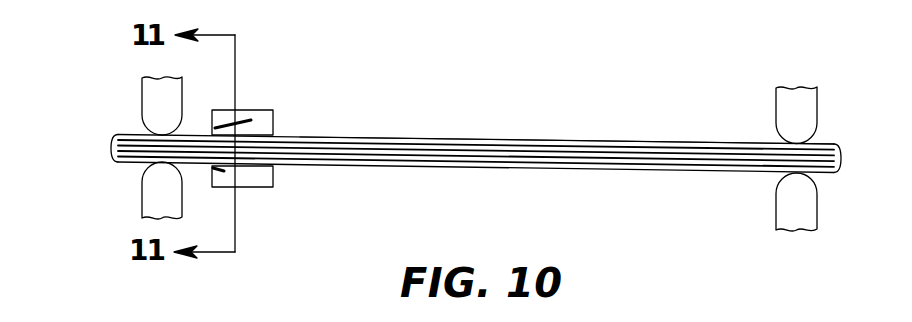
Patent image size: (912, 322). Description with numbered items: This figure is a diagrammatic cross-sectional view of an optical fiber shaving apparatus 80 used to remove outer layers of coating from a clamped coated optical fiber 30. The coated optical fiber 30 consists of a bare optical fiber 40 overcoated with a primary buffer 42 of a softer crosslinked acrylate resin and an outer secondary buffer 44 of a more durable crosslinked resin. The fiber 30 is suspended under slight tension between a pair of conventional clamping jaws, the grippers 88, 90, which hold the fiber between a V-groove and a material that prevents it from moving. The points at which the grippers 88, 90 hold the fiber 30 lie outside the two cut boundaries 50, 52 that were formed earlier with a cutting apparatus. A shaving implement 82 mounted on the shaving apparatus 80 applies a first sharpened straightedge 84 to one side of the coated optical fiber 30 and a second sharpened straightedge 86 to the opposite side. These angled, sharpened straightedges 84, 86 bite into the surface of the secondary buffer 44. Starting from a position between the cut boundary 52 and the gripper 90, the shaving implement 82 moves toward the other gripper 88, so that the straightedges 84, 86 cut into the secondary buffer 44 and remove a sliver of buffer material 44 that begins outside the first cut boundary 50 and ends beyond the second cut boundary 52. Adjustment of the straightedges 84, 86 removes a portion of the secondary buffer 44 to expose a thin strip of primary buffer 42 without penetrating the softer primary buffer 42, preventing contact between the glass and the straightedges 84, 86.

The coated optical fiber 30 is at (620, 194).
The bare optical fiber 40 is at (490, 150).
The primary buffer 42 is at (427, 148).
The secondary buffer 44 is at (370, 138).
The first cut boundary 50 is at (670, 148).
The second cut boundary 52 is at (313, 160).
The optical fiber shaving apparatus 80 is at (603, 90).
The shaving implement 82 is at (312, 120).
The first sharpened straightedge 84 is at (237, 134).
The second sharpened straightedge 86 is at (233, 167).
The gripper 88 is at (840, 124).
The gripper 90 is at (128, 100).